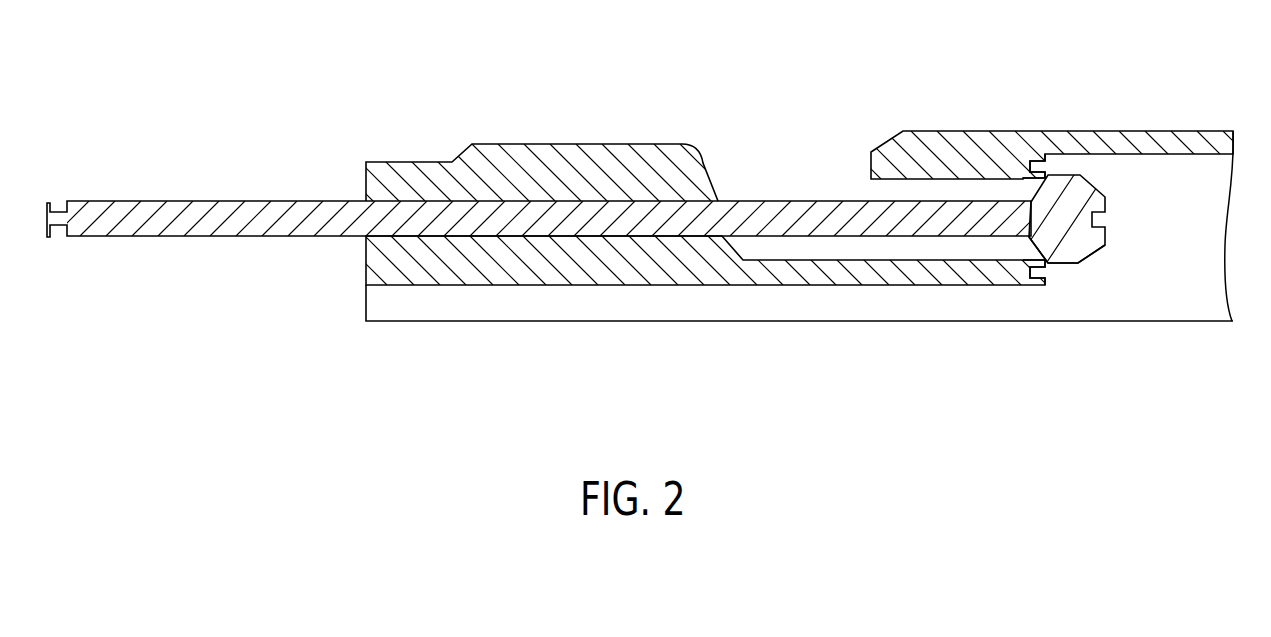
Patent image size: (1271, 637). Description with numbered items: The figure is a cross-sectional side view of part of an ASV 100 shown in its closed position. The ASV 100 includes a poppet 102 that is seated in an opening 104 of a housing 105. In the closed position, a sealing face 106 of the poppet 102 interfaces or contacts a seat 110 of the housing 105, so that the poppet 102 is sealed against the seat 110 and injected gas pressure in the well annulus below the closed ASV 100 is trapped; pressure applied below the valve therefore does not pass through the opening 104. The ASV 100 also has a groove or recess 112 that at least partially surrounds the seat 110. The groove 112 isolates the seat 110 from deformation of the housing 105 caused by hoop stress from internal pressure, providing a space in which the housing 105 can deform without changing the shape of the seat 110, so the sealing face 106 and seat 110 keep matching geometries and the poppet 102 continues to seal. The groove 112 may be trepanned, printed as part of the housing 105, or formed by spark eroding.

The ASV 100 is at (1178, 92).
The poppet 102 is at (222, 201).
The opening 104 is at (1031, 242).
The housing 105 is at (558, 145).
The sealing face 106 is at (1057, 173).
The seat 110 is at (1043, 259).
The groove or recess 112 is at (1038, 163).